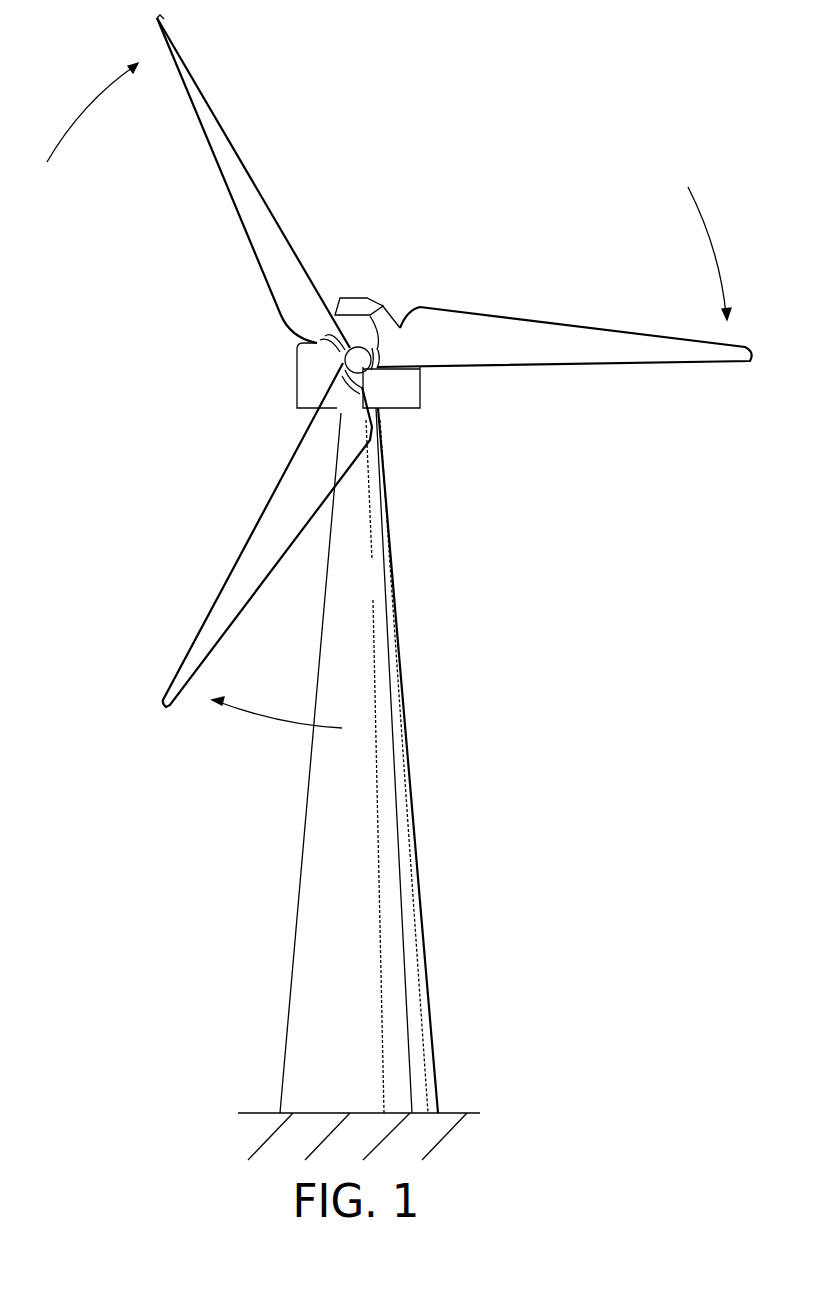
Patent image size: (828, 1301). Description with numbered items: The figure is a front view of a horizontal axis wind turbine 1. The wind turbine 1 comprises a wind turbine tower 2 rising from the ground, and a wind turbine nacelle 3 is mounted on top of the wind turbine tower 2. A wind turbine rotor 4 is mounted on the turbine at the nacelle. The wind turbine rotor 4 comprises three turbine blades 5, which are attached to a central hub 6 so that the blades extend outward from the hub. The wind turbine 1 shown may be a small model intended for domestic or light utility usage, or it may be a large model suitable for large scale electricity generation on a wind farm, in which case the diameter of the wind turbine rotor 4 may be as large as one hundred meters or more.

The wind turbine 1 is at (399, 587).
The wind turbine tower 2 is at (413, 807).
The wind turbine nacelle 3 is at (420, 388).
The wind turbine rotor 4 is at (399, 371).
The turbine blades 5 is at (553, 328).
The central hub 6 is at (366, 299).